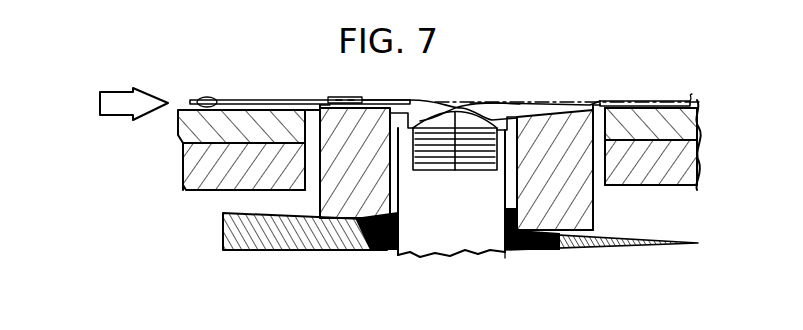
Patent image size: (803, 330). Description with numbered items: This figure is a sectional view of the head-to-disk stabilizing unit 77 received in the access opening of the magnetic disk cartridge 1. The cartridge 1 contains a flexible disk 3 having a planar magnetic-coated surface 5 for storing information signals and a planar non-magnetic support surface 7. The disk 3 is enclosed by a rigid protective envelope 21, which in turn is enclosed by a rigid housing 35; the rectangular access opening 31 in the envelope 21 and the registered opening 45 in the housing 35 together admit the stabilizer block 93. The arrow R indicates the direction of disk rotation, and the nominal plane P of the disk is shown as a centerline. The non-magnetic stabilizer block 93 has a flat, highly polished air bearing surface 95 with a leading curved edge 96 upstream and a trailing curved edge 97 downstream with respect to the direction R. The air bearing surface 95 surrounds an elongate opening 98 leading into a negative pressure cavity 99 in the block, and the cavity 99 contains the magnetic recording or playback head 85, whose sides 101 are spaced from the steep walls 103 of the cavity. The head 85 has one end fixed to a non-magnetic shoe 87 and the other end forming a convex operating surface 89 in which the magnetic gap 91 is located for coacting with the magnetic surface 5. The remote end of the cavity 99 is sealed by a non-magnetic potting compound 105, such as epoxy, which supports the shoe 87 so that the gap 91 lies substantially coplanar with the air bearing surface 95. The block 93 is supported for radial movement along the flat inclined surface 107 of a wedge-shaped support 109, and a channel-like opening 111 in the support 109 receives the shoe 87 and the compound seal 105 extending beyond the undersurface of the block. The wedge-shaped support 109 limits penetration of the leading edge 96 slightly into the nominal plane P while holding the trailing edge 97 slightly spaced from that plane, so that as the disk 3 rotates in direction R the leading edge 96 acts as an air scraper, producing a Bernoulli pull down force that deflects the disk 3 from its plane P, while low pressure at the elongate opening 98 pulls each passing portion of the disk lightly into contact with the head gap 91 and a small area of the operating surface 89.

The magnetic disk cartridge 1 is at (160, 168).
The flexible disk 3 is at (254, 100).
The magnetic-coated surface 5 is at (203, 97).
The non-magnetic support surface 7 is at (240, 100).
The protective envelope 21 is at (180, 124).
The access opening 31 is at (291, 123).
The housing 35 is at (182, 178).
The opening in housing 45 is at (313, 170).
The head-to-disk stabilizing unit 77 is at (655, 222).
The magnetic recording or playback head 85 is at (451, 181).
The non-magnetic shoe 87 is at (508, 253).
The operating surface 89 is at (415, 126).
The magnetic gap 91 is at (462, 107).
The stabilizer block 93 is at (352, 96).
The air bearing surface 95 is at (398, 100).
The leading curved edge 96 is at (324, 100).
The trailing curved edge 97 is at (600, 102).
The elongate opening 98 is at (490, 110).
The negative pressure cavity 99 is at (515, 101).
The sides of head 101 is at (408, 150).
The steep walls of cavity 103 is at (400, 194).
The potting compound seal 105 is at (518, 247).
The flat inclined surface 107 is at (380, 247).
The wedge-shaped support 109 is at (220, 238).
The channel-like opening 111 is at (407, 257).
The nominal plane of disk P is at (582, 101).
The direction of disk rotation R is at (155, 92).